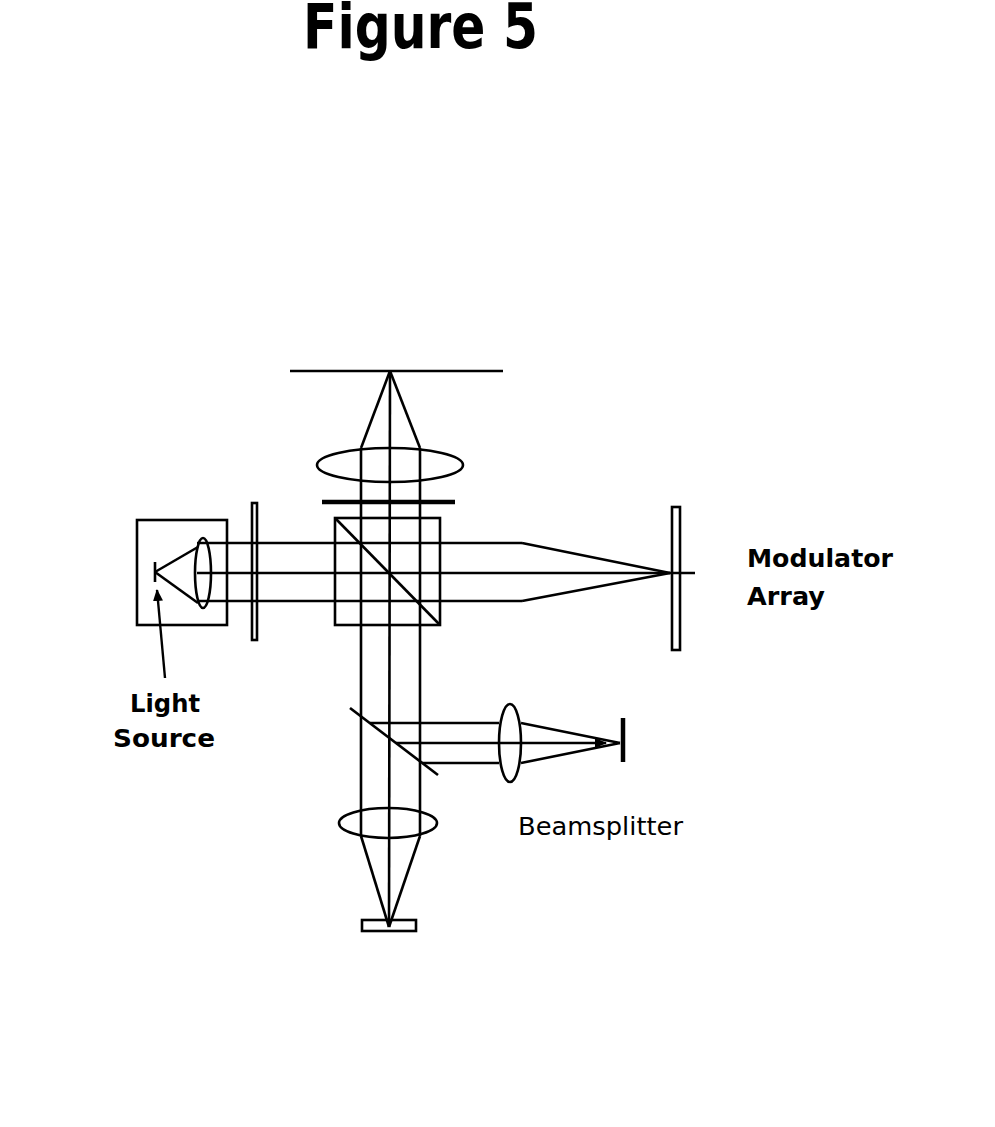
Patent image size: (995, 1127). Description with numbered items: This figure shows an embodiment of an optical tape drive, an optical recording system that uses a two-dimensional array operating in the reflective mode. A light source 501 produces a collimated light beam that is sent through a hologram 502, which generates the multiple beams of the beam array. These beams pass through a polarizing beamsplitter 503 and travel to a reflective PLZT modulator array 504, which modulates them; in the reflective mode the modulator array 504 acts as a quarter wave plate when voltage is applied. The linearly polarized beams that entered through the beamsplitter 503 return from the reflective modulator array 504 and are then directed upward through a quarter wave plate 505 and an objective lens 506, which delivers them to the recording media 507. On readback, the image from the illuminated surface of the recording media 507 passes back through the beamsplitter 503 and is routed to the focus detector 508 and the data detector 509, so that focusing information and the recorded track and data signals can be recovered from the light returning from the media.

The light source 501 is at (135, 520).
The hologram 502 is at (250, 502).
The polarizing beamsplitter 503 is at (441, 626).
The reflective PLZT modulator array 504 is at (678, 505).
The quarter wave plate 505 is at (463, 498).
The objective lens 506 is at (455, 449).
The recording media 507 is at (478, 368).
The focus detector 508 is at (630, 717).
The data detector 509 is at (414, 917).